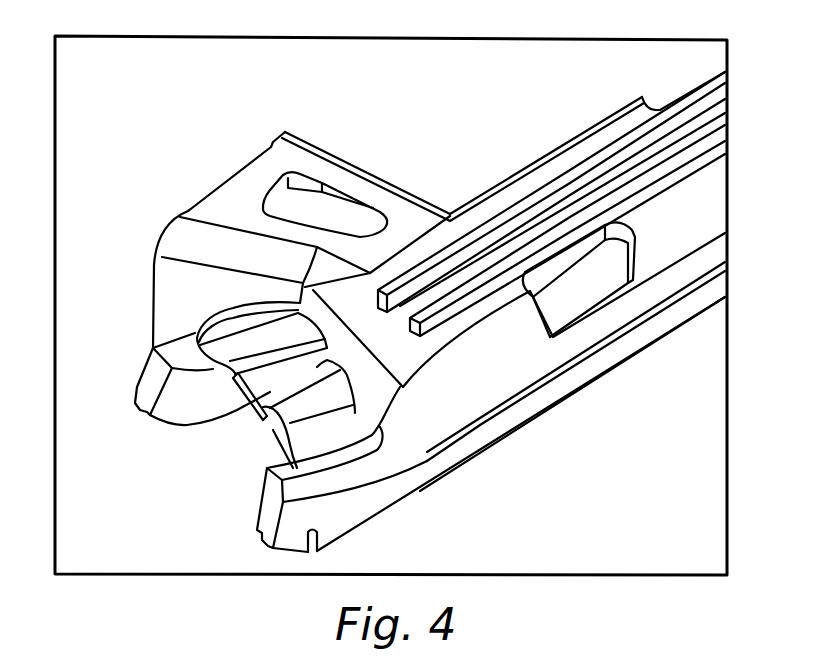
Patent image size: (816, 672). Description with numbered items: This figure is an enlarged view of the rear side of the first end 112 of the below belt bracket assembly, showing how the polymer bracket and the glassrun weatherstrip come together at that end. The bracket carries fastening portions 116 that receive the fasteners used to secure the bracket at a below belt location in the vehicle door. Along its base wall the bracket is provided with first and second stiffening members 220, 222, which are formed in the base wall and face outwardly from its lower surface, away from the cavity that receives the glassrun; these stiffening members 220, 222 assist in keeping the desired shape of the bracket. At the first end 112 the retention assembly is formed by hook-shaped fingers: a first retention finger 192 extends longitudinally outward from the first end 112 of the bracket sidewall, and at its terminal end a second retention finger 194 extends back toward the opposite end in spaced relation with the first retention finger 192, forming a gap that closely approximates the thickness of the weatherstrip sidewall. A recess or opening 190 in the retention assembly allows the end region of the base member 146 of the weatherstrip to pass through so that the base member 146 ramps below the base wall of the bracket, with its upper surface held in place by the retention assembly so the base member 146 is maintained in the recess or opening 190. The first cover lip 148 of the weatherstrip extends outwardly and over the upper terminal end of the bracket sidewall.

The first end 112 is at (418, 134).
The fastening portions 116 is at (268, 165).
The base member 146 is at (258, 422).
The first cover lip 148 is at (572, 378).
The recess or opening 190 is at (317, 373).
The first retention finger 192 is at (180, 350).
The second retention finger 194 is at (210, 405).
The first stiffening member 220 is at (657, 167).
The second stiffening member 222 is at (550, 187).